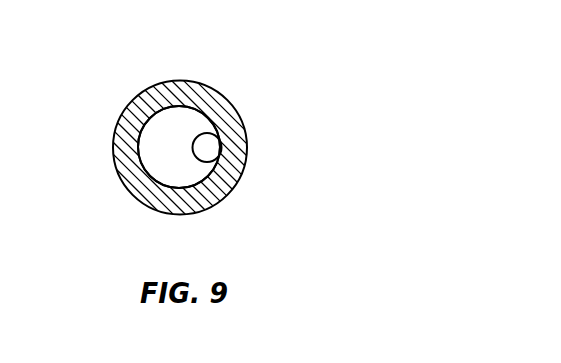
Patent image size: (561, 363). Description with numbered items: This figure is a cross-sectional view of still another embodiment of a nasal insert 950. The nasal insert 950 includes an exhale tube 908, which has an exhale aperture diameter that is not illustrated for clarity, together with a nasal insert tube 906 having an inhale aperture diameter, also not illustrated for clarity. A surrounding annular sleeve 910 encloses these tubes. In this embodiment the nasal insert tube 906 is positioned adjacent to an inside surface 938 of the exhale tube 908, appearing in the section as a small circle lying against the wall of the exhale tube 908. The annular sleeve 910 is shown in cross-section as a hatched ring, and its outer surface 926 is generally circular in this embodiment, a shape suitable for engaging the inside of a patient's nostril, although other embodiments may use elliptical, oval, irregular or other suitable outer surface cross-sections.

The nasal insert tube 906 is at (208, 174).
The exhale tube 908 is at (139, 114).
The annular sleeve 910 is at (222, 112).
The outer surface 926 is at (176, 82).
The inside surface 938 is at (222, 148).
The nasal insert 950 is at (396, 110).